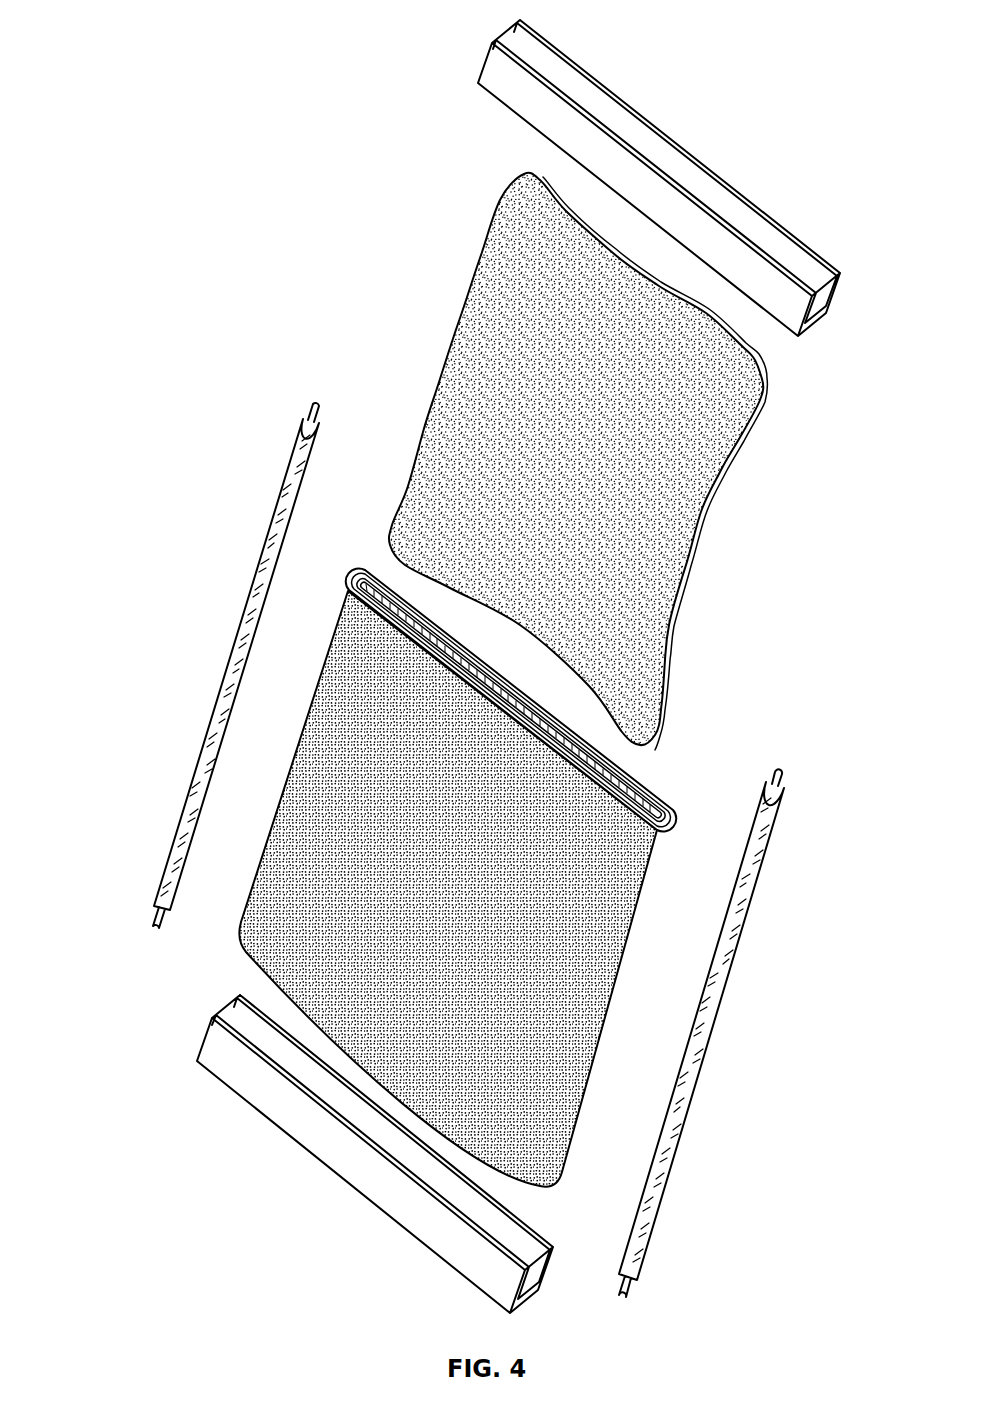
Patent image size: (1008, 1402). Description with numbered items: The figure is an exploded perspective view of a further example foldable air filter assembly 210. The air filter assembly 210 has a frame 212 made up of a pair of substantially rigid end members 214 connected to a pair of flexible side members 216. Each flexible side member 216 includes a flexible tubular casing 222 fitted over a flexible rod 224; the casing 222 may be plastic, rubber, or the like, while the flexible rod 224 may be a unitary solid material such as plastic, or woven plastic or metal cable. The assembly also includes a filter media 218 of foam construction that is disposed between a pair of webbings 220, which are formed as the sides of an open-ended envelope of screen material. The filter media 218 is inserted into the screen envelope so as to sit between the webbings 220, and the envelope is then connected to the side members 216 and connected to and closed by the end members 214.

The air filter assembly 210 is at (217, 48).
The frame 212 is at (149, 887).
The end member 214 is at (788, 256).
The flexible side member 216 is at (740, 1023).
The filter media 218 is at (718, 432).
The webbing 220 is at (650, 817).
The flexible tubular casing 222 is at (770, 815).
The flexible rod 224 is at (781, 772).